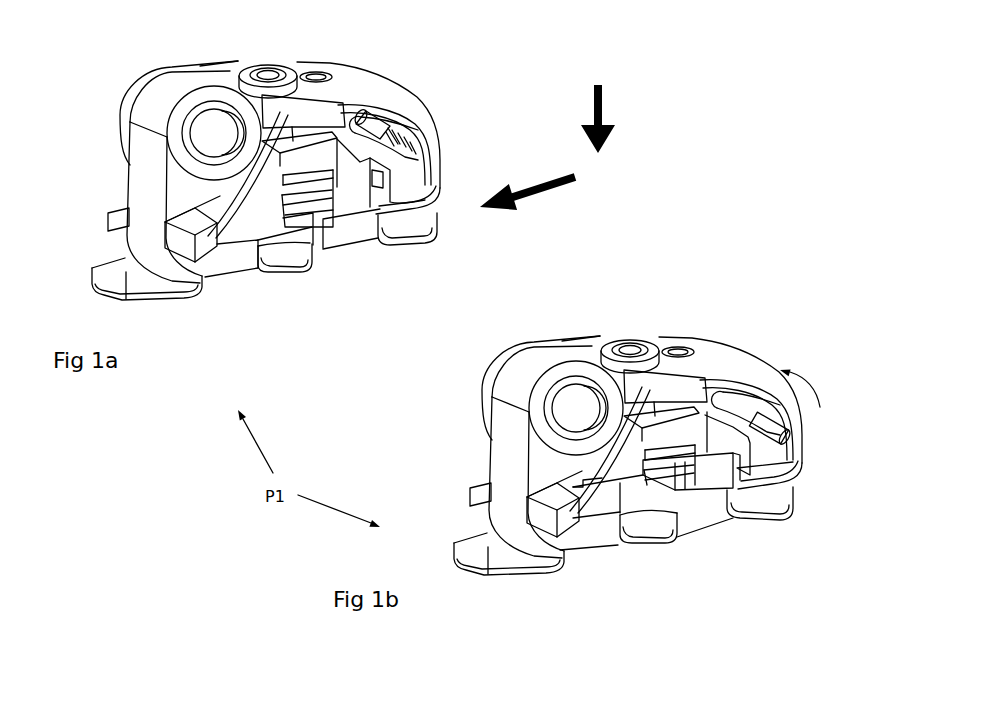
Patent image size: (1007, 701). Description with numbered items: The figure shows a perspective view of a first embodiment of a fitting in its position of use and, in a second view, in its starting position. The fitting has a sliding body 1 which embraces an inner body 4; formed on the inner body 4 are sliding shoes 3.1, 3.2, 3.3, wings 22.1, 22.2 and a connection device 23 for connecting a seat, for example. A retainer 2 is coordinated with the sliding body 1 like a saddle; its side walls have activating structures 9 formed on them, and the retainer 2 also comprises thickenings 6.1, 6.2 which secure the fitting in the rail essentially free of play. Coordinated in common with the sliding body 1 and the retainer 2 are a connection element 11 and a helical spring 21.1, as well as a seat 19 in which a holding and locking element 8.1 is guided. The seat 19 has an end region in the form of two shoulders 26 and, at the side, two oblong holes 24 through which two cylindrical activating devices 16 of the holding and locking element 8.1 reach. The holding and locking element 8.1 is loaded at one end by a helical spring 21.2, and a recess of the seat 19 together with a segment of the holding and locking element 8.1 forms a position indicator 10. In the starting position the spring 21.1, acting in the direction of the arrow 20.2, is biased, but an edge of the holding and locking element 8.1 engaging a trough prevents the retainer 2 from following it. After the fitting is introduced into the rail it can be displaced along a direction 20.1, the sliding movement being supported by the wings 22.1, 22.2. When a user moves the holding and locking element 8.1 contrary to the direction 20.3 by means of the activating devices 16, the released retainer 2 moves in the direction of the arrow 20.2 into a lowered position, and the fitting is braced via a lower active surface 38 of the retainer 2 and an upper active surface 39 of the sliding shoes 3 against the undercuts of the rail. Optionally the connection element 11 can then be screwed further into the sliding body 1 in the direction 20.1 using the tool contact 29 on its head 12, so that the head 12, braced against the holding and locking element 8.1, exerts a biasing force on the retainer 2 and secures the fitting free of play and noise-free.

In FIG. 1A, the sliding body 1 is at (108, 247).
In FIG. 1B, the sliding body 1 is at (498, 481).
In FIG. 1A, the retainer 2 is at (344, 266).
In FIG. 1B, the retainer 2 is at (688, 531).
In FIG. 1B, the sliding shoes 3 is at (760, 527).
In FIG. 1A, the sliding shoe 3.1 is at (190, 278).
In FIG. 1A, the sliding shoe 3.2 is at (285, 257).
In FIG. 1B, the sliding shoe 3.2 is at (648, 526).
In FIG. 1A, the sliding shoe 3.3 is at (422, 227).
In FIG. 1A, the inner body 4 is at (152, 192).
In FIG. 1B, the inner body 4 is at (547, 503).
In FIG. 1A, the thickening 6.1 is at (232, 257).
In FIG. 1B, the thickening 6.1 is at (609, 531).
In FIG. 1A, the thickening 6.2 is at (363, 228).
In FIG. 1B, the thickening 6.2 is at (700, 538).
In FIG. 1A, the holding and locking element 8.1 is at (372, 120).
In FIG. 1B, the holding and locking element 8.1 is at (749, 387).
In FIG. 1A, the activating structures 9 is at (320, 198).
In FIG. 1A, the position indicator 10 is at (322, 78).
In FIG. 1B, the position indicator 10 is at (730, 370).
In FIG. 1A, the connection element 11 is at (305, 58).
In FIG. 1B, the connection element 11 is at (676, 312).
In FIG. 1A, the head 12 is at (261, 60).
In FIG. 1B, the head 12 is at (630, 331).
In FIG. 1A, the cylindrical activating devices 16 is at (378, 132).
In FIG. 1B, the cylindrical activating devices 16 is at (801, 435).
In FIG. 1A, the seat 19 is at (435, 155).
In FIG. 1B, the seat 19 is at (746, 372).
In FIG. 1A, the direction 20.1 is at (553, 178).
In FIG. 1A, the arrow 20.2 is at (602, 110).
In FIG. 1B, the direction 20.3 is at (826, 381).
In FIG. 1A, the helical spring 21.1 is at (260, 125).
In FIG. 1A, the helical spring 21.2 is at (397, 138).
In FIG. 1A, the wing 22.1 is at (195, 235).
In FIG. 1B, the wing 22.1 is at (512, 474).
In FIG. 1A, the wing 22.2 is at (437, 193).
In FIG. 1B, the wing 22.2 is at (801, 491).
In FIG. 1A, the connection device 23 is at (138, 97).
In FIG. 1B, the connection device 23 is at (552, 376).
In FIG. 1A, the oblong holes 24 is at (417, 138).
In FIG. 1A, the shoulders 26 is at (230, 72).
In FIG. 1B, the shoulders 26 is at (574, 323).
In FIG. 1A, the tool contact 29 is at (274, 75).
In FIG. 1B, the lower active surface 38 is at (577, 543).
In FIG. 1B, the upper active surface 39 is at (488, 542).